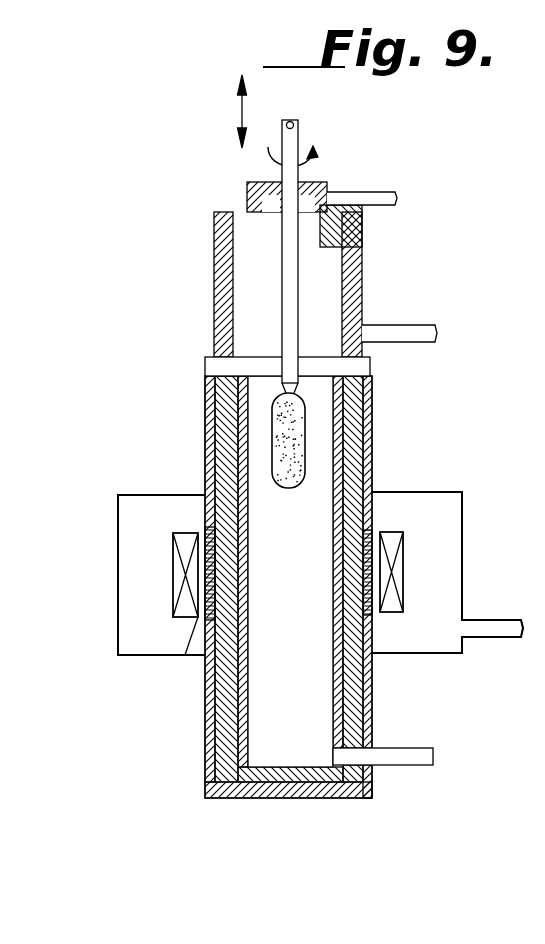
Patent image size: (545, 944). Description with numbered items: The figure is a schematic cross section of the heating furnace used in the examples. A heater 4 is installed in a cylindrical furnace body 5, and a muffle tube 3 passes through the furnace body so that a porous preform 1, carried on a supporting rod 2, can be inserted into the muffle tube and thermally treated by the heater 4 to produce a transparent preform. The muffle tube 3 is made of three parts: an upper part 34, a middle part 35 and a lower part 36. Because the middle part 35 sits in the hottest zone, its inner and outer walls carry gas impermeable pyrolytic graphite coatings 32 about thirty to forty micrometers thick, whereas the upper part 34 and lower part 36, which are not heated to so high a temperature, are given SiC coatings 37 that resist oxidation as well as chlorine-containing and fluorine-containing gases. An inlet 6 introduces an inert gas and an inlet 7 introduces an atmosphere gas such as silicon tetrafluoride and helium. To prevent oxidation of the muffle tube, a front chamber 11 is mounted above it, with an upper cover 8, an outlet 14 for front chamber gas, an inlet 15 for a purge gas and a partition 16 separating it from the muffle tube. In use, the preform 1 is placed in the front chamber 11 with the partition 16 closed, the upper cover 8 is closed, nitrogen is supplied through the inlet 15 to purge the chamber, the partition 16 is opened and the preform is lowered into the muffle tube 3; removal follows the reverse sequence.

The porous preform 1 is at (372, 391).
The supporting rod 2 is at (290, 139).
The muffle tube 3 is at (288, 603).
The heater 4 is at (173, 567).
The furnace body 5 is at (462, 506).
The inlet for introducing an inert gas 6 is at (484, 632).
The inlet for introducing an atmosphere gas 7 is at (402, 766).
The upper cover 8 is at (325, 182).
The front chamber 11 is at (357, 243).
The outlet for front chamber gas 14 is at (375, 192).
The inlet of a gas for purging 15 is at (425, 325).
The partition 16 is at (205, 366).
The pyrolytic graphite coating 32 is at (205, 652).
The upper part 34 is at (210, 425).
The middle part 35 is at (210, 528).
The lower part 36 is at (212, 745).
The SiC coating 37 is at (212, 397).